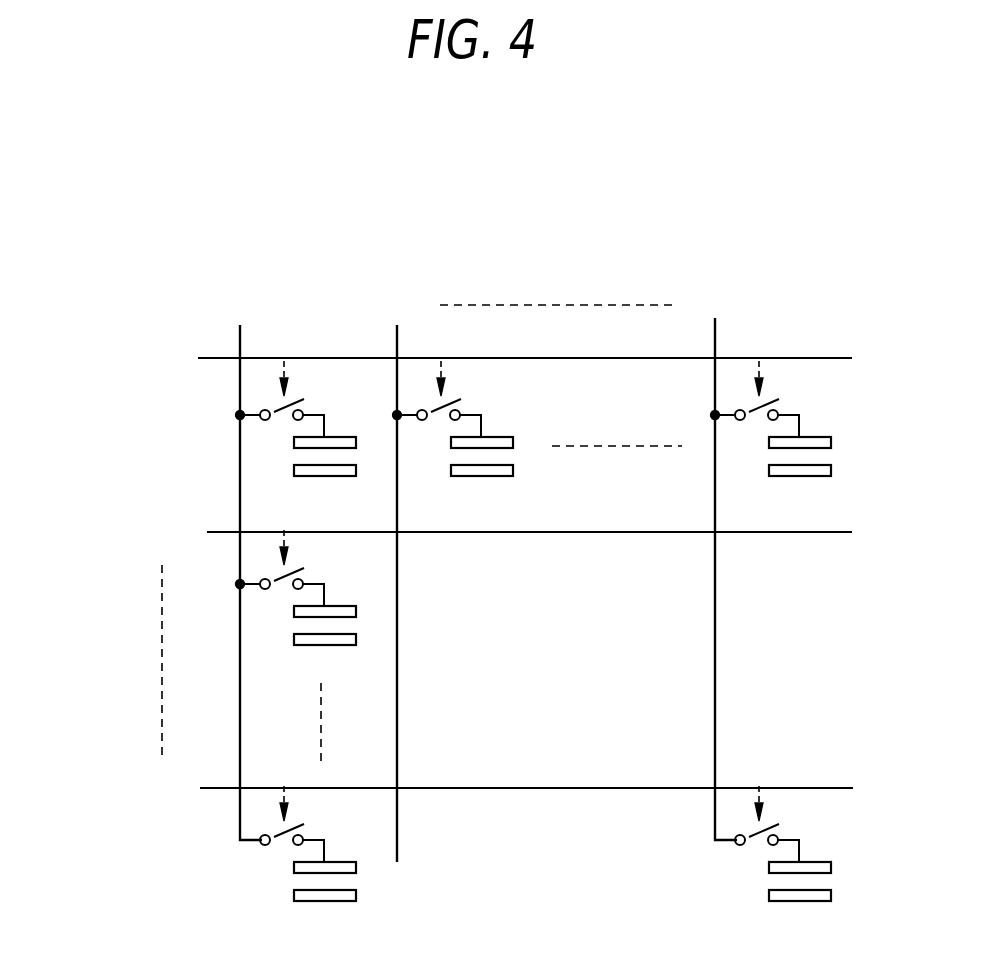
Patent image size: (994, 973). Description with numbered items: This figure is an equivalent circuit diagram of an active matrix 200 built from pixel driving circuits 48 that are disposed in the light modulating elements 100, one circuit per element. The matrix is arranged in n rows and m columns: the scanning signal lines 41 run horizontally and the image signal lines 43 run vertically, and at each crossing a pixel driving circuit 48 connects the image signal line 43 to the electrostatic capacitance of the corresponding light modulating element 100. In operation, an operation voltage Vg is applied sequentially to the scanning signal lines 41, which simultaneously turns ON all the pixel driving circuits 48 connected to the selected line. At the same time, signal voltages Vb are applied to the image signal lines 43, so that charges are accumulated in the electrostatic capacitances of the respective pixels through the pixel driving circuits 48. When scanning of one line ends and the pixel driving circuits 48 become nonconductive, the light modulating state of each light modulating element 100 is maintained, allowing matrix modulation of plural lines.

The display panel pixel array 200 is at (741, 216).
The scanning signal line 41 is at (213, 360).
The image signal line 43 is at (242, 341).
The pixel driving circuit 48 is at (310, 389).
The light modulating element 100 is at (362, 582).